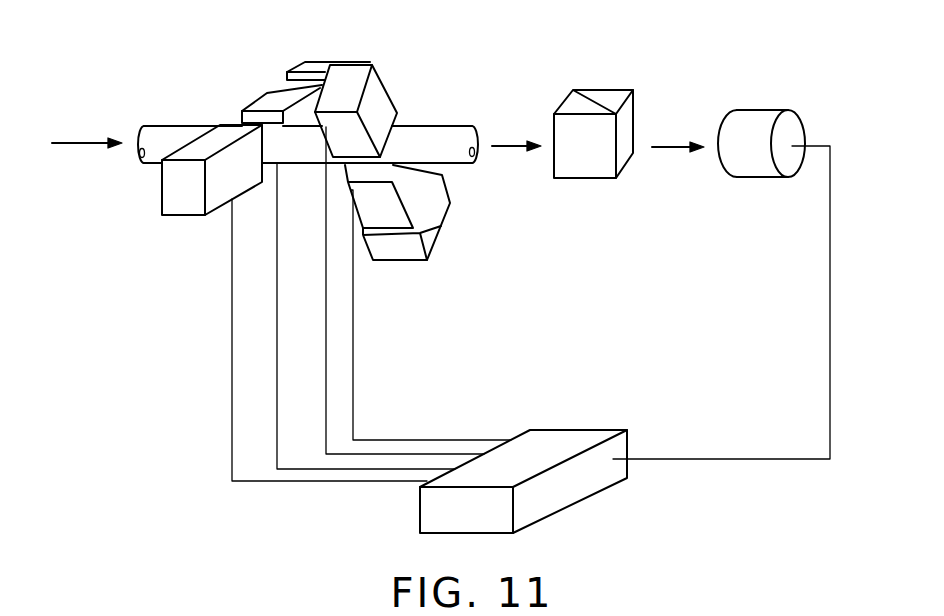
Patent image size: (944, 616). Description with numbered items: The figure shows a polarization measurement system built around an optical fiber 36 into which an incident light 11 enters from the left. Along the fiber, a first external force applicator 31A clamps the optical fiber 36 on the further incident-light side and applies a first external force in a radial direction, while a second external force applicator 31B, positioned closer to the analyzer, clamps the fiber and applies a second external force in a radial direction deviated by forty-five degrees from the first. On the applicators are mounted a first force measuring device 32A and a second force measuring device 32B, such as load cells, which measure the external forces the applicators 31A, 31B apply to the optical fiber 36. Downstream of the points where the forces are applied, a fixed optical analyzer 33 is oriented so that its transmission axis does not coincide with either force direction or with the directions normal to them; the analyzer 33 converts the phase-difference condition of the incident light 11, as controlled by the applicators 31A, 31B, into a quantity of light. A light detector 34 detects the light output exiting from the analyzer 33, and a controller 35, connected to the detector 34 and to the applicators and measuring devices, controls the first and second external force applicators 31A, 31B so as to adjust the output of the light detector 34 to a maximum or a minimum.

The incident light 11 is at (78, 145).
The first external force applicator 31A is at (180, 213).
The second external force applicator 31B is at (383, 100).
The first force measuring device 32A is at (322, 62).
The second force measuring device 32B is at (427, 256).
The optical analyzer 33 is at (617, 90).
The light detector 34 is at (765, 110).
The controller 35 is at (590, 430).
The optical fiber 36 is at (162, 125).